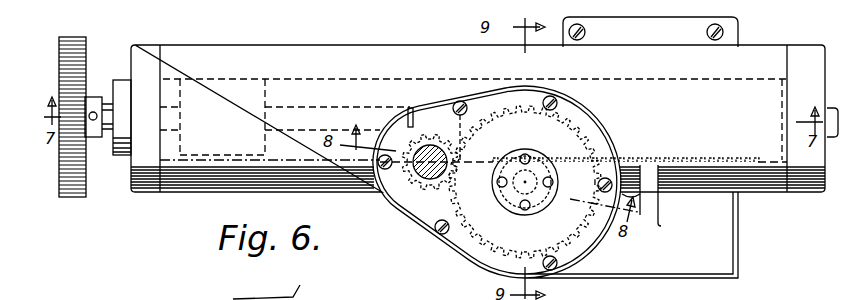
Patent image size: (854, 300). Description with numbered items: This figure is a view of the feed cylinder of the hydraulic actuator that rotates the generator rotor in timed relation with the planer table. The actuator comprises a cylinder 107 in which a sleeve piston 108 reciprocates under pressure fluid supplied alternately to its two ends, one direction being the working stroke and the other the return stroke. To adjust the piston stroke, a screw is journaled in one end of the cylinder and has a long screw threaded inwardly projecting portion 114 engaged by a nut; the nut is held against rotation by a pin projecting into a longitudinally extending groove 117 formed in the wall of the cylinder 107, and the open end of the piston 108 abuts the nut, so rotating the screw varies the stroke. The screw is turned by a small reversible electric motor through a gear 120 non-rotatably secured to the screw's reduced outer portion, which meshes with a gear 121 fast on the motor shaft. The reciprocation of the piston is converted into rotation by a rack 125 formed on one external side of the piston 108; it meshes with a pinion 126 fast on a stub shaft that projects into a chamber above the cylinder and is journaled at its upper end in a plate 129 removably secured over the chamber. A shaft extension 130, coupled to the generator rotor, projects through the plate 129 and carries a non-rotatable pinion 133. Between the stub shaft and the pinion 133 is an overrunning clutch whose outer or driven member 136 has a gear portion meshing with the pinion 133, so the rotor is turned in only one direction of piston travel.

The cylinder 107 is at (240, 48).
The sleeve piston 108 is at (770, 97).
The screw threaded inwardly projecting portion 114 is at (368, 113).
The longitudinally extending groove 117 is at (212, 152).
The gear 120 is at (80, 198).
The gear 121 is at (82, 299).
The rack 125 is at (697, 158).
The pinion 126 is at (535, 214).
The plate 129 is at (582, 241).
The shaft extension 130 is at (432, 175).
The pinion 133 is at (417, 186).
The outer or driven member 136 is at (497, 236).